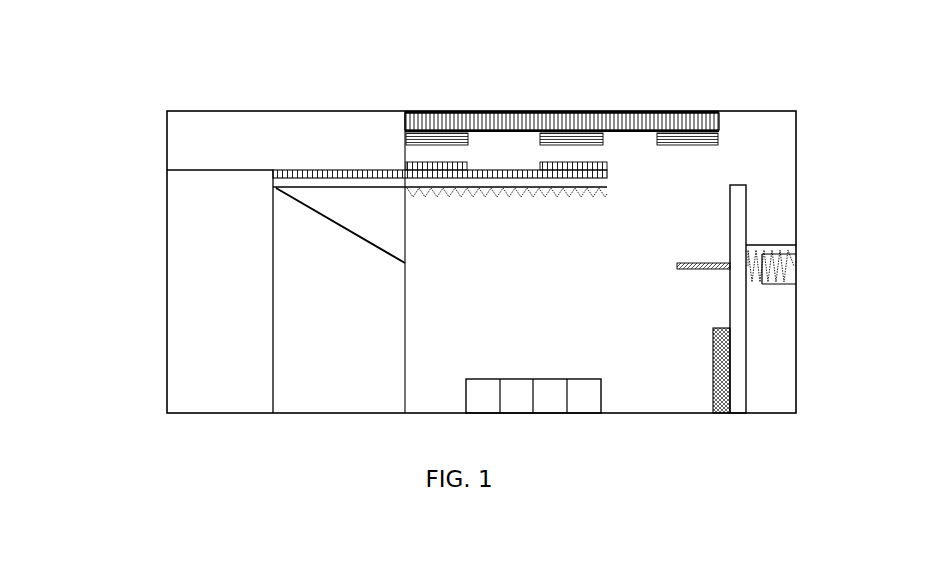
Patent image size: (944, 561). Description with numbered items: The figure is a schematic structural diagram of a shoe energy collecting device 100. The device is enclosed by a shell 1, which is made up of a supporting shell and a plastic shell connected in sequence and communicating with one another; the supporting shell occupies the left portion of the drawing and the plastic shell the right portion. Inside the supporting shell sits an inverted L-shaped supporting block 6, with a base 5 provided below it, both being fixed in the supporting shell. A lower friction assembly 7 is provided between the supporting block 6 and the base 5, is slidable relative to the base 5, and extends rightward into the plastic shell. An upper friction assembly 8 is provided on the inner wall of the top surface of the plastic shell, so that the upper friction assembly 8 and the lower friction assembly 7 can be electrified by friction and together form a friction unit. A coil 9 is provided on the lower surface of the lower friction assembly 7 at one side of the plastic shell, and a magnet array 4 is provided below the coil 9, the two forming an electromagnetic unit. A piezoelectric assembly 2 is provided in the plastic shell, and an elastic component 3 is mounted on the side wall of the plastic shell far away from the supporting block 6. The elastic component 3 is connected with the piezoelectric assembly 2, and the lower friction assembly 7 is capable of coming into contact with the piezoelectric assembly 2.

The shoe energy collecting device 100 is at (320, 102).
The shell 1 is at (796, 153).
The piezoelectric assembly 2 is at (796, 245).
The elastic component 3 is at (796, 272).
The magnet array 4 is at (601, 396).
The base 5 is at (300, 342).
The supporting block 6 is at (190, 262).
The lower friction assembly 7 is at (353, 217).
The upper friction assembly 8 is at (405, 123).
The coil 9 is at (610, 189).